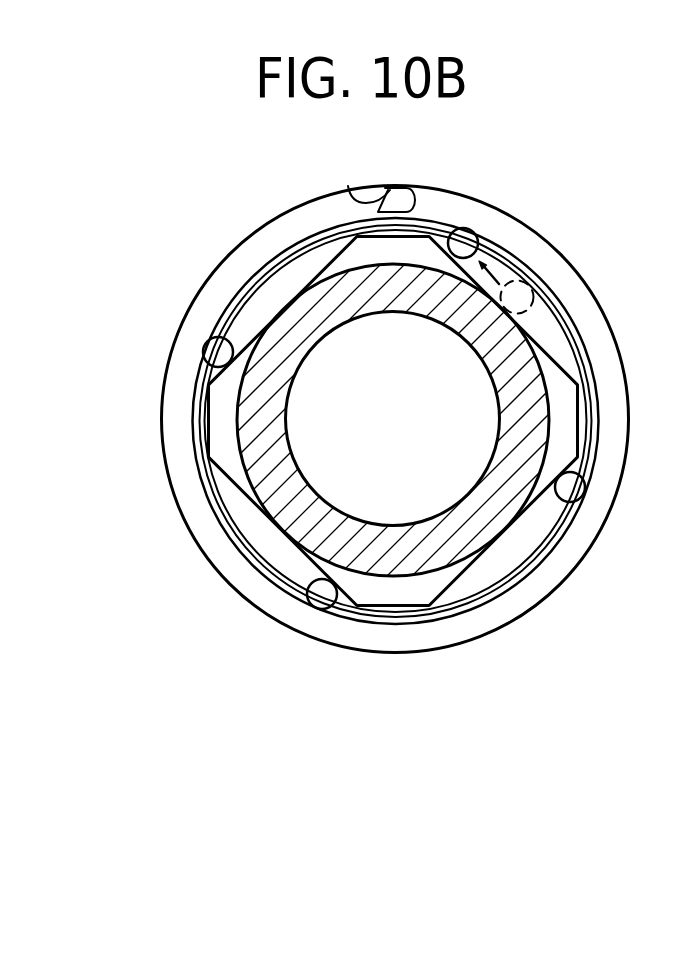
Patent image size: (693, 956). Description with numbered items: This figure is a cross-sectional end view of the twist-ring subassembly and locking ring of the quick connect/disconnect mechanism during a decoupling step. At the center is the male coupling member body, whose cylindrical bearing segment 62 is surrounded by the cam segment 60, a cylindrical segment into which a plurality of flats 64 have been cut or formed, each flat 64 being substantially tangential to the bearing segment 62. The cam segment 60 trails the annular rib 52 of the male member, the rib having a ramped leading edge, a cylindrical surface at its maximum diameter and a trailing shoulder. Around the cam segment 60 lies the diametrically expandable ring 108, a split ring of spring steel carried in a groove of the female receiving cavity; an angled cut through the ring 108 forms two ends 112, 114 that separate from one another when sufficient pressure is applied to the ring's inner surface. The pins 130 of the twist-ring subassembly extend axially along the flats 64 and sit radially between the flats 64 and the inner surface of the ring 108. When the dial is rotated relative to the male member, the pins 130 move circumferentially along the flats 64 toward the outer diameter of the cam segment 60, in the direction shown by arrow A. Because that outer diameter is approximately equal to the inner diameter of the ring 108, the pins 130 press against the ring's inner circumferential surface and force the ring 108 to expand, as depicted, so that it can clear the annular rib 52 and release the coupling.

The annular rib 52 is at (557, 528).
The cam segment 60 is at (197, 416).
The cylindrical bearing segment 62 is at (302, 500).
The flats 64 is at (250, 340).
The diametrically expandable ring 108 is at (232, 268).
The end of the ring 112 is at (406, 188).
The end of the ring 114 is at (348, 186).
The pins 130 is at (462, 242).
The arrow A is at (502, 268).